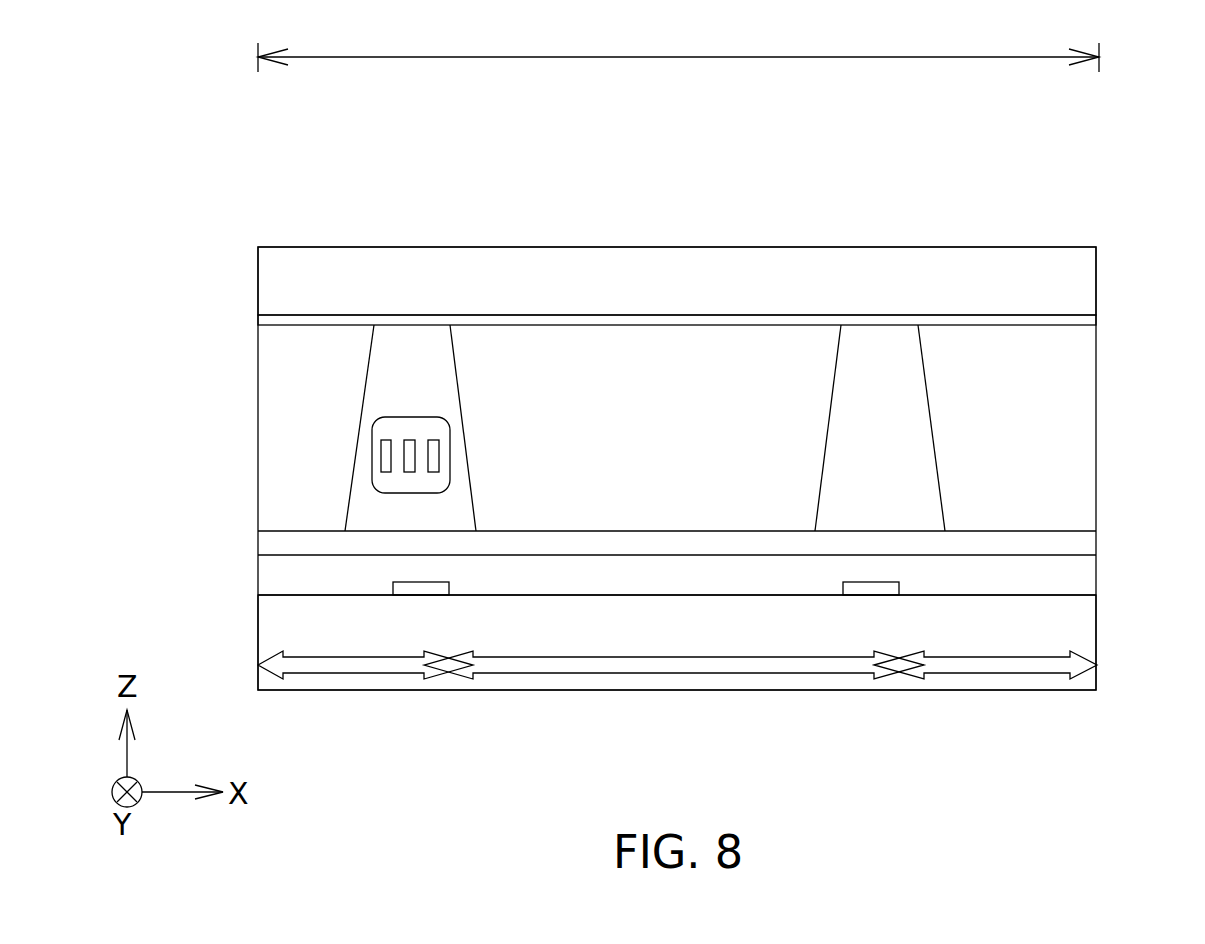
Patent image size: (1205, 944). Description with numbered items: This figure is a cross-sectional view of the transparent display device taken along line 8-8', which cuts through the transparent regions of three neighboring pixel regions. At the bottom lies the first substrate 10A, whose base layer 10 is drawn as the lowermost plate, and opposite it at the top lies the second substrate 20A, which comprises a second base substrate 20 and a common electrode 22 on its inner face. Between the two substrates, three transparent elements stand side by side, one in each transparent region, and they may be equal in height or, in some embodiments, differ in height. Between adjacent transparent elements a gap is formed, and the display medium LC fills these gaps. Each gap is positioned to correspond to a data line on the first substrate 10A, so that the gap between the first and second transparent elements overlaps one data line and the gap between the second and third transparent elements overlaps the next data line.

The line 8-8' is at (678, 48).
The second base substrate 20 is at (620, 290).
The common electrode 22 is at (1089, 322).
The second substrate 20A is at (1110, 247).
The display medium LC is at (413, 415).
The lower substrate 10 is at (572, 640).
The first substrate 10A is at (1110, 531).